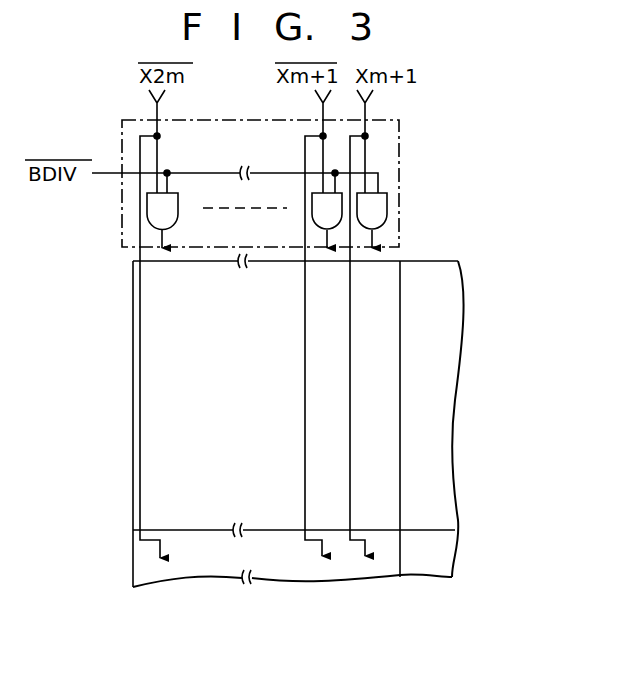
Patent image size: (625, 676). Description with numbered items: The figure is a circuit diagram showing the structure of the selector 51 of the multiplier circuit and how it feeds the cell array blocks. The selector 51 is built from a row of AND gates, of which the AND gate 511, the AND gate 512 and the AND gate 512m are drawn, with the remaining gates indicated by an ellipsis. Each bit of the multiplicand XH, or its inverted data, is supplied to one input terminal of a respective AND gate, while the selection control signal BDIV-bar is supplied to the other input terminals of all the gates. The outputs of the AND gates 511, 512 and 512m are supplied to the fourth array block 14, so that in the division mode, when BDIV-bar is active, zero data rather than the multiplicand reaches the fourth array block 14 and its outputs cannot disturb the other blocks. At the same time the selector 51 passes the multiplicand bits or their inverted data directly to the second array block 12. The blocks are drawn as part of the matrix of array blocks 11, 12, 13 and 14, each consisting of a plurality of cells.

The selector 51 is at (233, 118).
The AND gate 511 is at (387, 205).
The AND gate 512 is at (340, 223).
The AND gate 512m is at (178, 214).
The array block 11 is at (448, 276).
The second array block 12 is at (306, 566).
The array block 13 is at (425, 560).
The fourth array block 14 is at (152, 420).